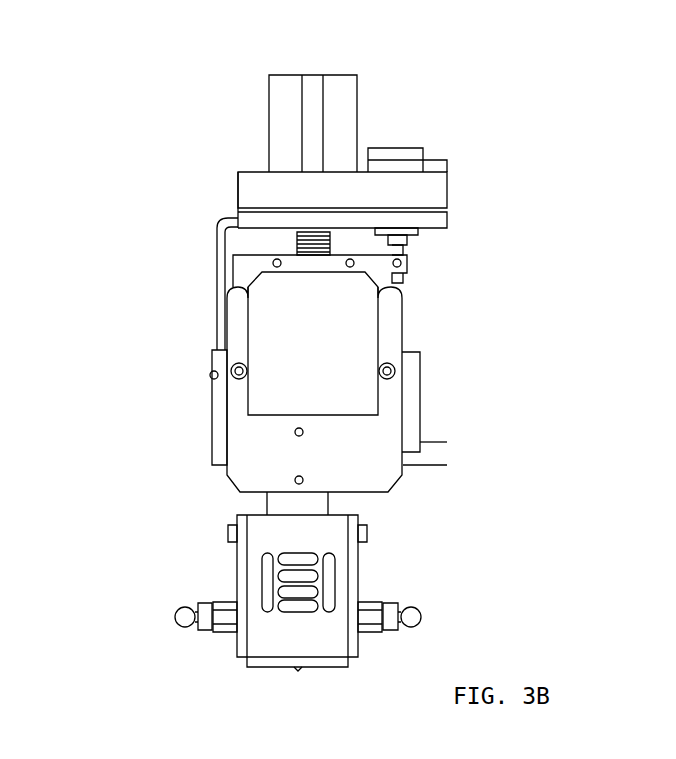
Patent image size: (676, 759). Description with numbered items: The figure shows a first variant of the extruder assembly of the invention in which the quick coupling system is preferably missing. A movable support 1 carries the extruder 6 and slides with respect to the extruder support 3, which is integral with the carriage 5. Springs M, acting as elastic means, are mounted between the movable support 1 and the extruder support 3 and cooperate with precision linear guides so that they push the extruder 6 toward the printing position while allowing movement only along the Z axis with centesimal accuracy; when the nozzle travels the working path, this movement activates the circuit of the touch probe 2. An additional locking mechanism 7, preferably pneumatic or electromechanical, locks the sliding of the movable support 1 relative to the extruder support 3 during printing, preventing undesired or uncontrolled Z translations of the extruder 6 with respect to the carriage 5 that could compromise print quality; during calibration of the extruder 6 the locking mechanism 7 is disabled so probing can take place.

The movable support 1 is at (252, 276).
The touch probe 2 is at (412, 157).
The extruder support 3 is at (282, 463).
The carriage 5 is at (427, 468).
The extruder 6 is at (243, 542).
The locking mechanism 7 is at (260, 140).
The springs M is at (295, 241).